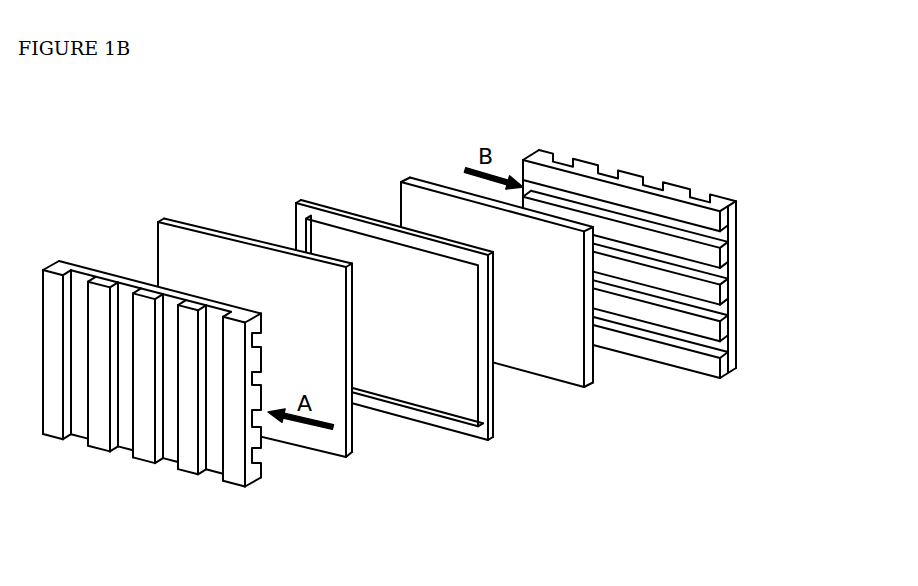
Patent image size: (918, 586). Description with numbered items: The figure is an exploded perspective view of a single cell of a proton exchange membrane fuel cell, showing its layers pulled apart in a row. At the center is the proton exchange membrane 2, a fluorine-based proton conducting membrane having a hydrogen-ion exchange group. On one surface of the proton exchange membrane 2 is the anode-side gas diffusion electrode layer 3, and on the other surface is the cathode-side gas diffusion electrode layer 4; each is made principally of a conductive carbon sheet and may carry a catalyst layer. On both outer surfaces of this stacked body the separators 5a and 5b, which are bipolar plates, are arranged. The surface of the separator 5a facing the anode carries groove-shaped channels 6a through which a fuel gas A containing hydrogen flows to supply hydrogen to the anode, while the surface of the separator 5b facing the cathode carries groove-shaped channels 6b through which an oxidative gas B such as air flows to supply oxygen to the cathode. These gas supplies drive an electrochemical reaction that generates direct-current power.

The proton exchange membrane 2 is at (336, 222).
The anode-side gas diffusion electrode layer 3 is at (222, 262).
The cathode-side gas diffusion electrode layer 4 is at (430, 213).
The separator 5a is at (128, 300).
The separator 5b is at (571, 158).
The groove-shaped channels 6a is at (260, 452).
The groove-shaped channels 6b is at (722, 312).